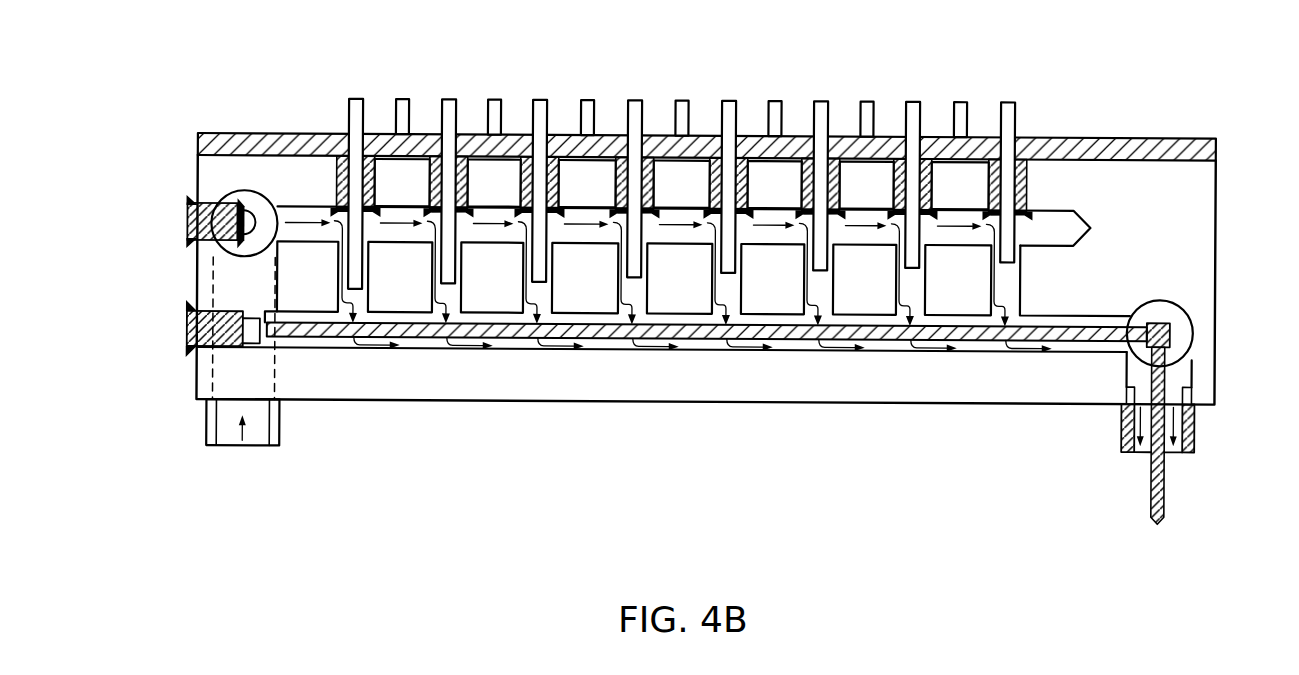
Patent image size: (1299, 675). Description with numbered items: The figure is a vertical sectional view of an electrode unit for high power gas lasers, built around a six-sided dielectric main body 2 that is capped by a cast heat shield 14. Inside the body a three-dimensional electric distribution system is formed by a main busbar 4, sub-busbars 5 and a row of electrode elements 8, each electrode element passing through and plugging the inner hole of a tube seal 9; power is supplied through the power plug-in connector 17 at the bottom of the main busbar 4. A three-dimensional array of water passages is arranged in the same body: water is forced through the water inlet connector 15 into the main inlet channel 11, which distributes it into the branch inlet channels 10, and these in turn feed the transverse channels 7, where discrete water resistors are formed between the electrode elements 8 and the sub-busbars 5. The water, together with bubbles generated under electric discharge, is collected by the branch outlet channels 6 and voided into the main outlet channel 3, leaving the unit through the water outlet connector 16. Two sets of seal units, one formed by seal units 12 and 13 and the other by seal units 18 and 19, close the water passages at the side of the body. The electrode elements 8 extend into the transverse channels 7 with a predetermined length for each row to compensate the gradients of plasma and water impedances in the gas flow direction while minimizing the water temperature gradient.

The dielectric main body 2 is at (1187, 185).
The main outlet channel 3 is at (1177, 340).
The main busbar 4 is at (1168, 322).
The sub-busbars 5 is at (982, 326).
The branch outlet channels 6 is at (895, 341).
The transverse channels 7 is at (1013, 282).
The electrode elements 8 is at (352, 117).
The tube seal 9 is at (337, 180).
The branch inlet channels 10 is at (1090, 223).
The main inlet channel 11 is at (228, 244).
The seal unit 12 is at (190, 331).
The seal unit 13 is at (188, 348).
The cast heat shield 14 is at (1130, 142).
The water inlet connector 15 is at (282, 435).
The water outlet connector 16 is at (1197, 437).
The power plug-in connector 17 is at (1165, 495).
The seal unit 18 is at (187, 217).
The seal unit 19 is at (190, 203).